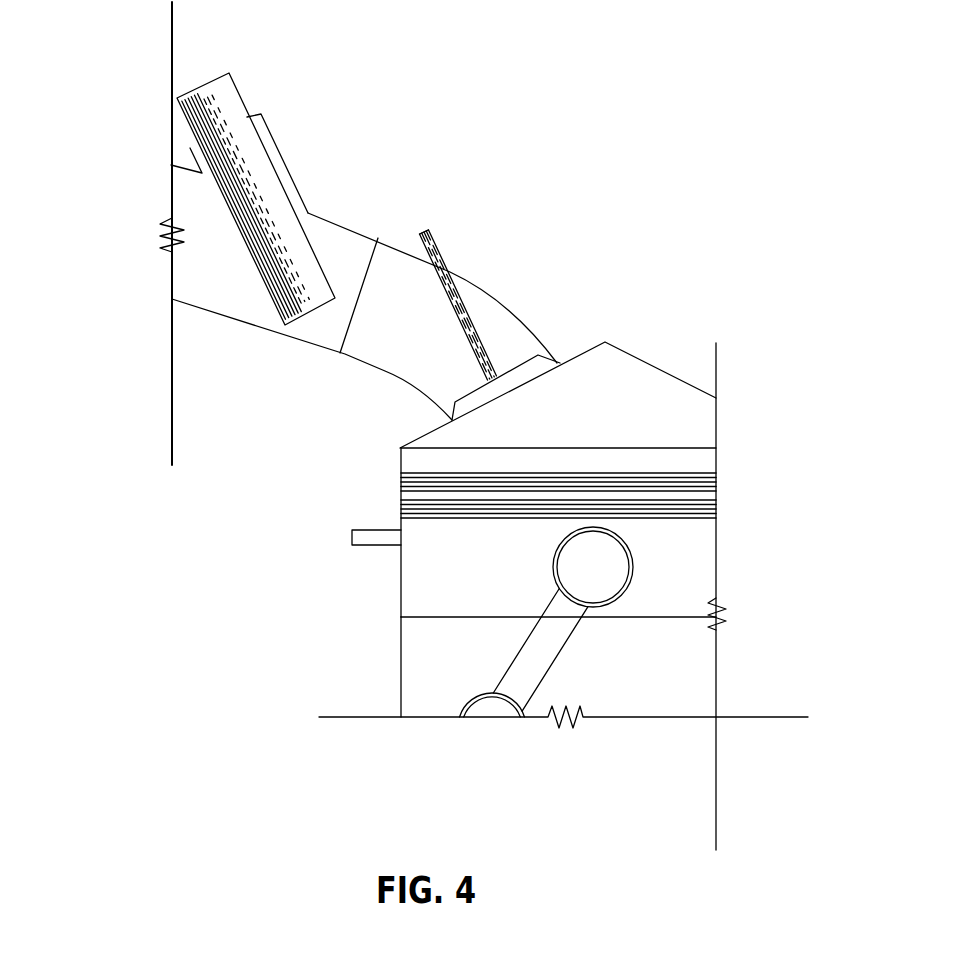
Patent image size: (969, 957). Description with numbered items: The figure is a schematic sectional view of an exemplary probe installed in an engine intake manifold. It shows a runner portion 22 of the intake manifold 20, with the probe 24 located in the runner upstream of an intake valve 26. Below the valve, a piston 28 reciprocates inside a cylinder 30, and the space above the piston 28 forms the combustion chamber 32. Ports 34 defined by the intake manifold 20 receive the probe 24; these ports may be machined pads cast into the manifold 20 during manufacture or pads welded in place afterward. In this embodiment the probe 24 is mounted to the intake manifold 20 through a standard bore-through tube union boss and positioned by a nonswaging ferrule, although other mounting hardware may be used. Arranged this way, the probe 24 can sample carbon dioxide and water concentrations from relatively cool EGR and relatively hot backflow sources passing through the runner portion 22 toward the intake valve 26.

The intake manifold 20 is at (213, 316).
The runner portion 22 is at (226, 254).
The probe 24 is at (226, 112).
The ports 34 is at (272, 142).
The intake valve 26 is at (427, 225).
The combustion chamber 32 is at (600, 403).
The piston 28 is at (670, 567).
The cylinder 30 is at (400, 650).